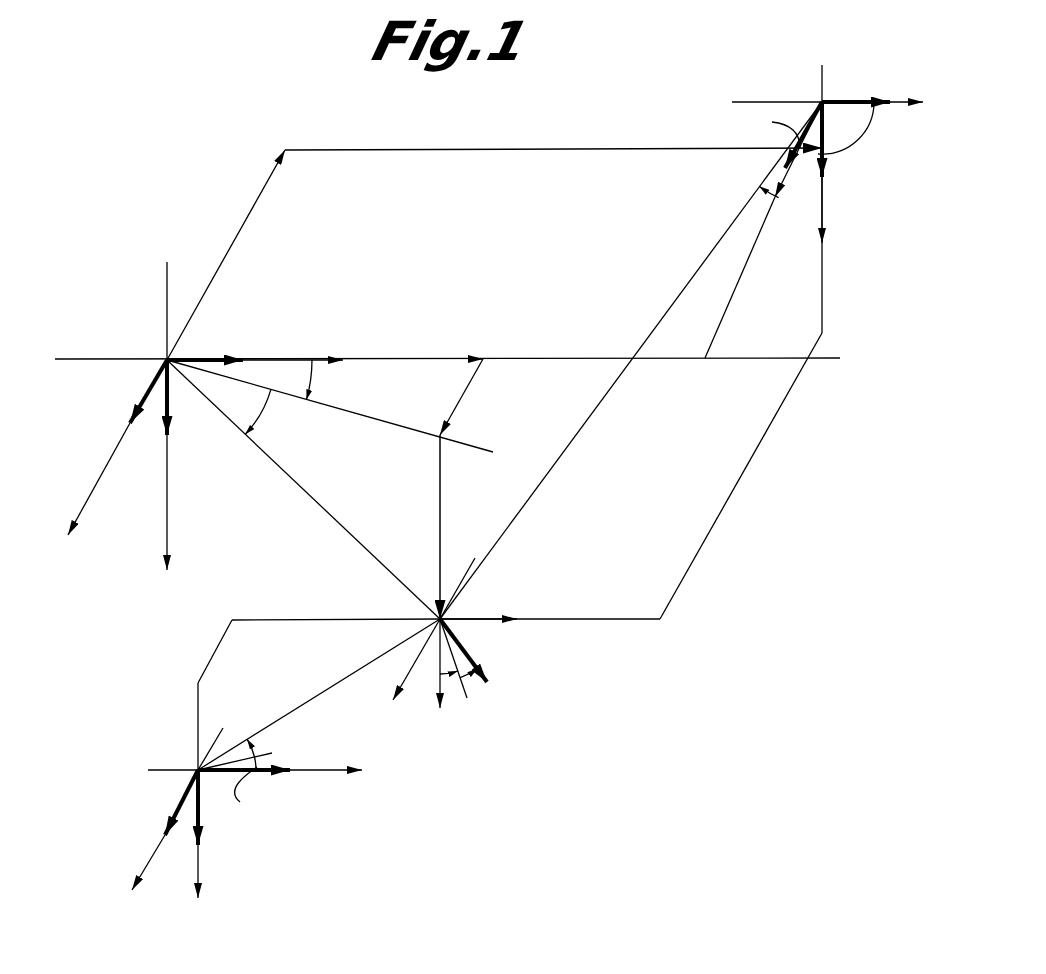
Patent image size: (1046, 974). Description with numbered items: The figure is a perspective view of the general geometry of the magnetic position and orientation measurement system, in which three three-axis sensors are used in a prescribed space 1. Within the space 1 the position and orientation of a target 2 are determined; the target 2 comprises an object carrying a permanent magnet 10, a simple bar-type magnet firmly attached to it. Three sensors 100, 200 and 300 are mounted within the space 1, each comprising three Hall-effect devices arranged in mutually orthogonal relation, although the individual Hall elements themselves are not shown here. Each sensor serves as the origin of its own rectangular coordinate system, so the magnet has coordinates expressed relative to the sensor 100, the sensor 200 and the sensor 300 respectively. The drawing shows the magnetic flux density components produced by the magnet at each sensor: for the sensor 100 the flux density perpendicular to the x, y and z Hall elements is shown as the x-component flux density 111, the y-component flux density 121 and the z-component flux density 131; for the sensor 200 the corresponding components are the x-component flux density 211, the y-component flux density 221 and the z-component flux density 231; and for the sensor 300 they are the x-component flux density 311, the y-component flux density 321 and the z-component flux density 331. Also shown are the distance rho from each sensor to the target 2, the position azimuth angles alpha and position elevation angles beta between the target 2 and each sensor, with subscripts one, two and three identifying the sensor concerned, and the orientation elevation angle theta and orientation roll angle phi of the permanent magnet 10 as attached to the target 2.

The space 1 is at (457, 436).
The target 2 is at (430, 605).
The permanent magnet 10 is at (485, 668).
The sensor 100 is at (158, 366).
The magnetic flux density f1x 111 is at (172, 355).
The magnetic flux density f1y 121 is at (145, 405).
The magnetic flux density f1z 131 is at (170, 400).
The sensor 200 is at (815, 97).
The magnetic flux density f2x 211 is at (845, 101).
The magnetic flux density f2y 221 is at (799, 150).
The magnetic flux density f2z 231 is at (826, 158).
The sensor 300 is at (185, 765).
The magnetic flux density f3x 311 is at (275, 775).
The magnetic flux density f3y 321 is at (180, 825).
The magnetic flux density f3z 331 is at (200, 822).